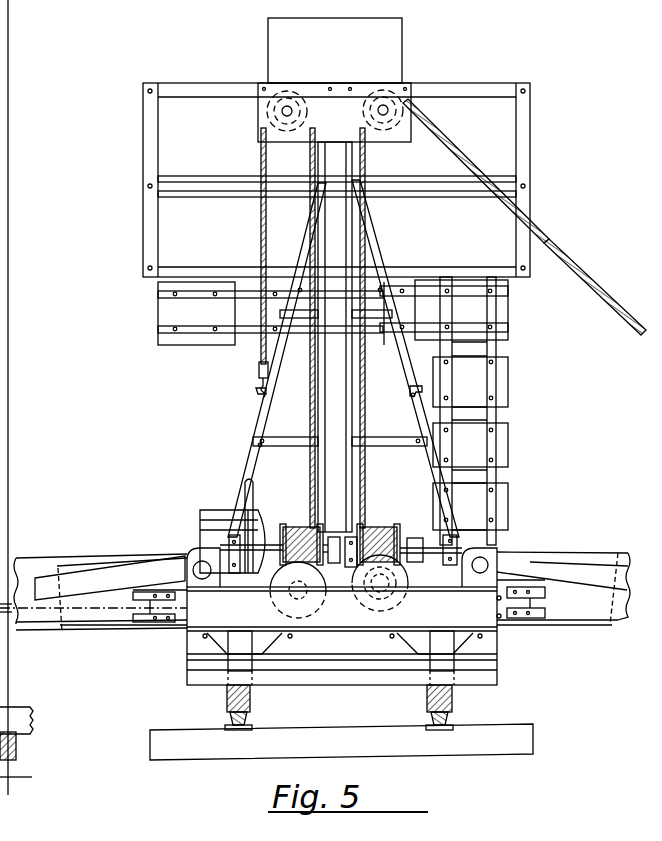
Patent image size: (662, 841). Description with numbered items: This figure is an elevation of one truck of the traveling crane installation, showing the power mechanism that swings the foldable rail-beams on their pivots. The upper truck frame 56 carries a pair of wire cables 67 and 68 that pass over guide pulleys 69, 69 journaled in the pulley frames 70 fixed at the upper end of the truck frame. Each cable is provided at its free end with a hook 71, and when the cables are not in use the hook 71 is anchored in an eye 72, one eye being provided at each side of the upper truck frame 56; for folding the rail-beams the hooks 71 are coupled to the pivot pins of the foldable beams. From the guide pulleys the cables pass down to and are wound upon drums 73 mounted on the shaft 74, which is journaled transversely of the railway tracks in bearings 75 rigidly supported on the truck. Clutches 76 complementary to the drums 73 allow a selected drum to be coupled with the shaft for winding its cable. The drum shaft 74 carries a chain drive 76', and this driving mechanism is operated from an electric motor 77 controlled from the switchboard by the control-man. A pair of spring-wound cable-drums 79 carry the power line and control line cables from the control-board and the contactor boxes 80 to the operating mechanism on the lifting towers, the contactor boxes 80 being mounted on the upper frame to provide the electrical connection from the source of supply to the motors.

The upper truck frame 56 is at (498, 413).
The wire cable 67 is at (261, 223).
The wire cable 68 is at (547, 240).
The guide pulley 69 is at (380, 100).
The pulley frame 70 is at (476, 171).
The hook 71 is at (262, 380).
The eye 72 is at (258, 393).
The drum 73 is at (299, 526).
The shaft 74 is at (333, 536).
The bearing 75 is at (231, 538).
The clutch 76 is at (502, 539).
The chain drive 76' is at (343, 594).
The electric motor 77 is at (207, 528).
The spring-wound cable-drum 79 is at (310, 572).
The contactor box 80 is at (500, 503).